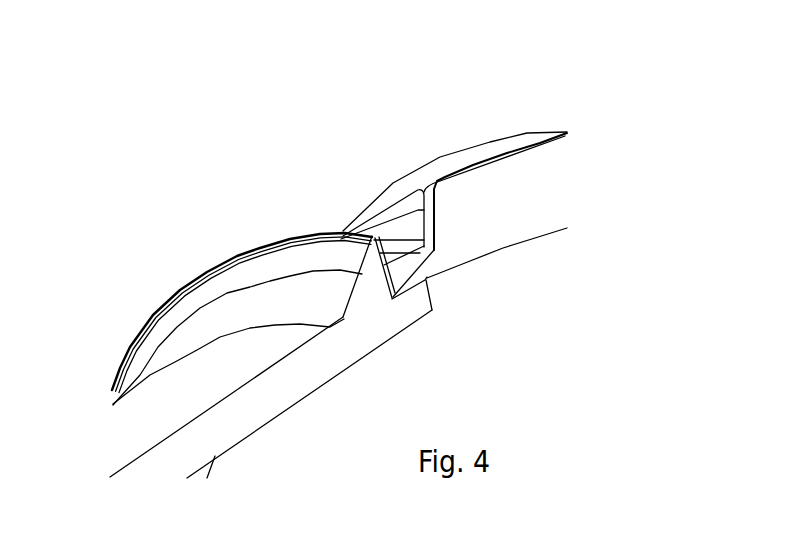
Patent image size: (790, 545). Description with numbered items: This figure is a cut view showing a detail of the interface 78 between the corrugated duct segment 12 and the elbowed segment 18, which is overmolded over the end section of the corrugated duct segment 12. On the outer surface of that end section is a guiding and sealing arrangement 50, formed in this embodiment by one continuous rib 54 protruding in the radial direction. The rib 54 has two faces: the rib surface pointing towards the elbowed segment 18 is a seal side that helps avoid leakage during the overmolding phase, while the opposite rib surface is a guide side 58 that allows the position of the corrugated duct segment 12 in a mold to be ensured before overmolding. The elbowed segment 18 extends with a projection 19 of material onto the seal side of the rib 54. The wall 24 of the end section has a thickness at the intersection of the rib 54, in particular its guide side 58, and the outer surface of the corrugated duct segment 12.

The corrugated duct segment 12 is at (125, 451).
The elbowed segment 18 is at (529, 147).
The projection 19 is at (383, 254).
The wall 24 is at (385, 342).
The guiding and sealing arrangement 50 is at (242, 245).
The rib 54 is at (308, 234).
The guide side 58 is at (263, 270).
The interface 78 is at (452, 310).